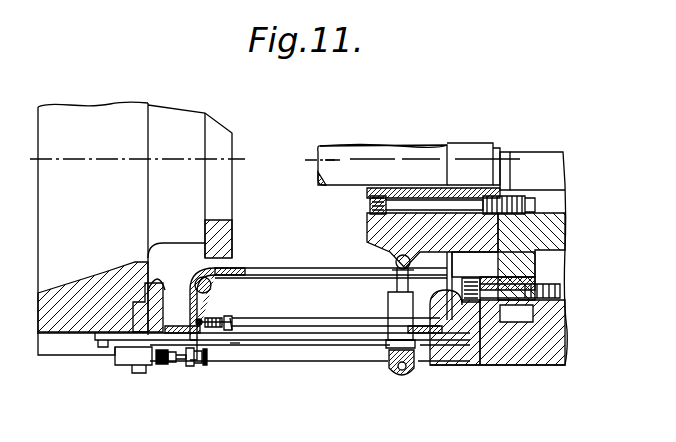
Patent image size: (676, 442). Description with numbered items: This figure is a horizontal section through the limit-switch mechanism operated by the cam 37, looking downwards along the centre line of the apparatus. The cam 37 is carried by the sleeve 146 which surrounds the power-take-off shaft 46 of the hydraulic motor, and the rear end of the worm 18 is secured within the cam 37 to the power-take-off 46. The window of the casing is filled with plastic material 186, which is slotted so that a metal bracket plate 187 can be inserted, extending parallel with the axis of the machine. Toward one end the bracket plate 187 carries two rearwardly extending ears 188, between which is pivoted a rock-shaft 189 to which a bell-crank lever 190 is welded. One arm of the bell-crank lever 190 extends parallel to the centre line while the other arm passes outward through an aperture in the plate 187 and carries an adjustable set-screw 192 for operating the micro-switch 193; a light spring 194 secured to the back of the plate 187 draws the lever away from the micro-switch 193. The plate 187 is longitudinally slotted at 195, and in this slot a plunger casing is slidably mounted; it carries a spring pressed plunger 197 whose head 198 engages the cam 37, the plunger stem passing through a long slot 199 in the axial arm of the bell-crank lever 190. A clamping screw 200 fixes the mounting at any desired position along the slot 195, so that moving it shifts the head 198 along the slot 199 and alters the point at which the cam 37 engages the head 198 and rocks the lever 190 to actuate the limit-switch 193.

The worm 18 is at (370, 150).
The cam 37 is at (412, 222).
The spring pressed plunger 197 is at (445, 292).
The power-take-off shaft 46 is at (520, 163).
The rock-shaft 189 is at (208, 268).
The bell-crank lever 190 is at (240, 268).
The long slot 199 is at (354, 272).
The head 198 is at (372, 248).
The sleeve 146 is at (537, 208).
The light spring 194 is at (226, 318).
The micro-switch 193 is at (160, 364).
The adjustable set-screw 192 is at (200, 366).
The rearwardly extending ears 188 is at (221, 322).
The bracket plate 187 is at (233, 343).
The longitudinal slot 195 is at (347, 308).
The plastic material 186 is at (368, 312).
The clamping screw 200 is at (418, 374).